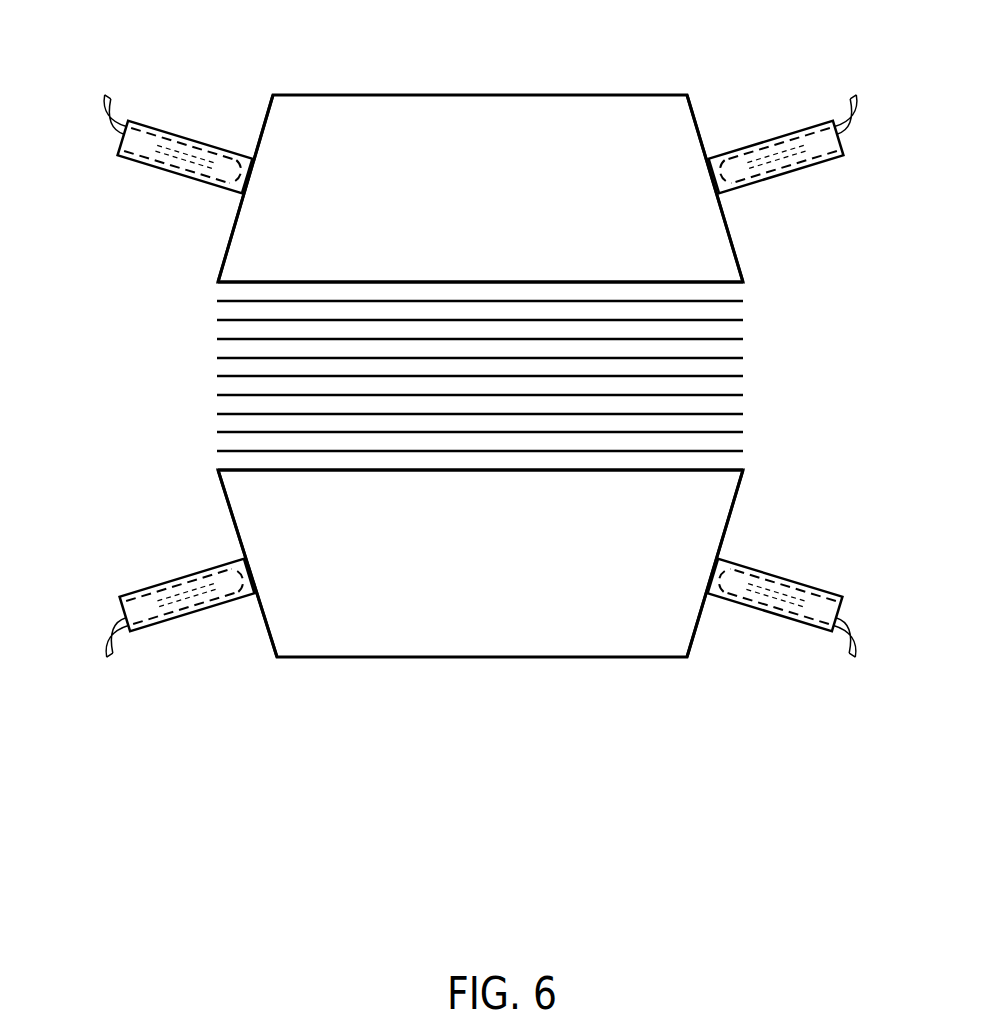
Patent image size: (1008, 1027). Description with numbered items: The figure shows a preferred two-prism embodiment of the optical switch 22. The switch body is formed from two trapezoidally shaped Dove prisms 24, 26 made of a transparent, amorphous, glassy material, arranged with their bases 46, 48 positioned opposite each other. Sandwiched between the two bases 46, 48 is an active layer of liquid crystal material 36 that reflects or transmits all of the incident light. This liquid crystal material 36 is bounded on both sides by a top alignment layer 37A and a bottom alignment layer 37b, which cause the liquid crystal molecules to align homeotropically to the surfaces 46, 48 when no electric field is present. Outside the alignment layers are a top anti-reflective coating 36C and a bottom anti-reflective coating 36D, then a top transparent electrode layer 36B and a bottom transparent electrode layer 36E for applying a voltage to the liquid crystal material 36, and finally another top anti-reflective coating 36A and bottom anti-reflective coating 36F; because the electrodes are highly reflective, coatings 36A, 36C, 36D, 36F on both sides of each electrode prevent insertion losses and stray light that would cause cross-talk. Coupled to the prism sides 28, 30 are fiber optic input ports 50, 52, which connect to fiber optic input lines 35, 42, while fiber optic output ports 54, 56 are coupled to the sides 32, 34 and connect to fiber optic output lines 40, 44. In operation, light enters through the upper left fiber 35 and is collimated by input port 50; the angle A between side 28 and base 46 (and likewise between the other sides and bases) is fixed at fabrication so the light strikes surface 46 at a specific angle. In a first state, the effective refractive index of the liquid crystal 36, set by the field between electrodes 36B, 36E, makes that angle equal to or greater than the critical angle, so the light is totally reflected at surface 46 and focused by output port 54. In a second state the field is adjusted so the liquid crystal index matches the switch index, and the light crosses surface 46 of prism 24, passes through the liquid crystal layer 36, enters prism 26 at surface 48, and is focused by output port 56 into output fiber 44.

The optical switch 22 is at (462, 56).
The Dove prism 24 is at (500, 163).
The Dove prism 26 is at (515, 615).
The side 28 is at (264, 118).
The side 30 is at (267, 631).
The side 32 is at (698, 118).
The side 34 is at (699, 631).
The fiber optic input line 35 is at (104, 130).
The liquid crystal material 36 is at (212, 376).
The top antireflective coating 36A is at (748, 300).
The top transparent electrode layer 36B is at (748, 319).
The top anti-reflective coating 36C is at (748, 339).
The bottom antireflective coating 36D is at (748, 413).
The bottom transparent electrode layer 36E is at (748, 432).
The bottom antireflective coating 36F is at (748, 451).
The top alignment layer 37A is at (212, 357).
The bottom alignment layer 37b is at (212, 395).
The fiber optic output line 40 is at (860, 132).
The fiber optic input line 42 is at (101, 621).
The fiber optic output line 44 is at (862, 618).
The base 46 is at (573, 279).
The base 48 is at (573, 473).
The fiber optic input port 50 is at (208, 187).
The fiber optic input port 52 is at (186, 622).
The fiber optic output port 54 is at (792, 178).
The fiber optic output port 56 is at (786, 622).